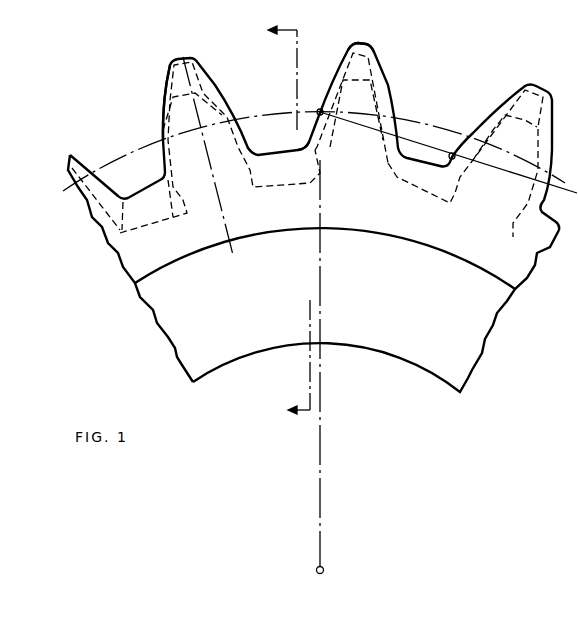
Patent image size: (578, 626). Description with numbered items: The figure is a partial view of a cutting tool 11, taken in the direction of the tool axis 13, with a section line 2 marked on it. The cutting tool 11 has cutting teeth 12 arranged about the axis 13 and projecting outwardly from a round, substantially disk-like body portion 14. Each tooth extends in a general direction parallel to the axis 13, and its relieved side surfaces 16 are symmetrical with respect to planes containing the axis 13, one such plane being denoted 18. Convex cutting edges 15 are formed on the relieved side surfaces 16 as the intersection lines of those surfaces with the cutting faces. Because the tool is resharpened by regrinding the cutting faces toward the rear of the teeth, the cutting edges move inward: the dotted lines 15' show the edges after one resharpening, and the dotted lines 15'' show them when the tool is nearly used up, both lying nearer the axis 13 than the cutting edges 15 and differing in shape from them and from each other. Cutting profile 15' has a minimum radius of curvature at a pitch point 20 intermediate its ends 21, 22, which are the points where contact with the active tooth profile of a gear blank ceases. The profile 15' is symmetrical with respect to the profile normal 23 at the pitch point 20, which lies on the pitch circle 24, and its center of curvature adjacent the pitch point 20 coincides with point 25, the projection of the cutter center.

The cutting tool 11 is at (162, 308).
The cutting teeth 12 is at (203, 102).
The axis 13 is at (322, 568).
The body portion 14 is at (128, 257).
The cutting edges 15 is at (314, 134).
The cutting edges 15' is at (367, 108).
The cutting edges 15'' is at (380, 113).
The relieved side surfaces 16 is at (170, 110).
The plane 18 is at (228, 215).
The pitch point 20 is at (325, 116).
The end 21 is at (357, 43).
The end 22 is at (313, 147).
The profile normal 23 is at (355, 124).
The pitch circle 24 is at (291, 115).
The projection of the cutter center 25 is at (452, 152).
The section line 2- 2 is at (278, 23).